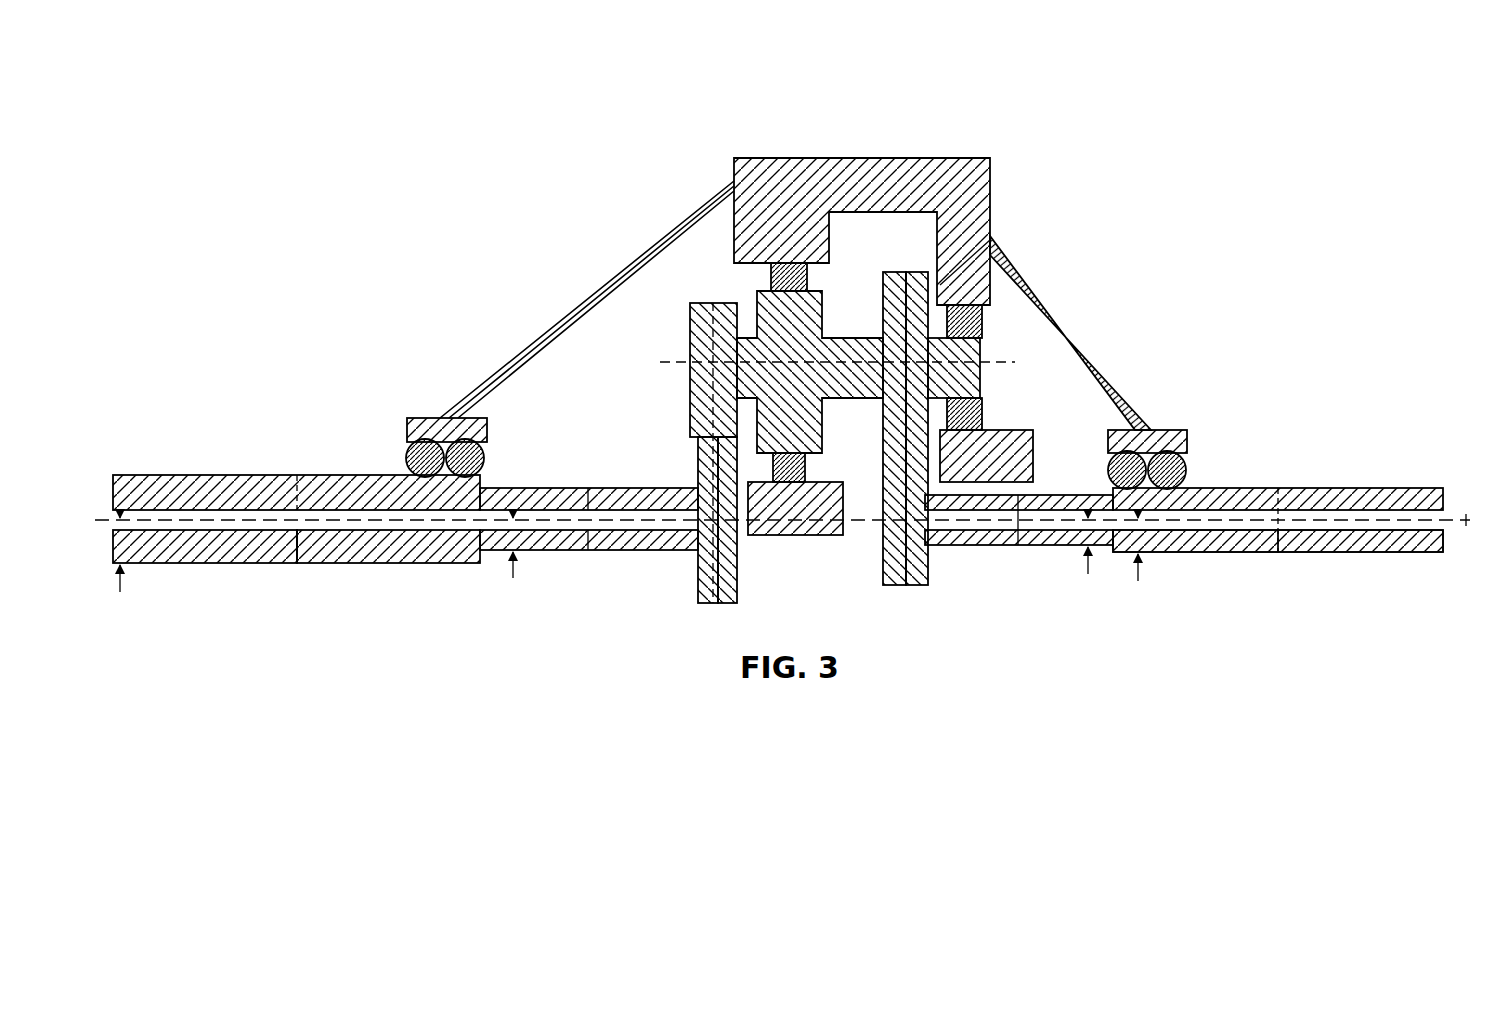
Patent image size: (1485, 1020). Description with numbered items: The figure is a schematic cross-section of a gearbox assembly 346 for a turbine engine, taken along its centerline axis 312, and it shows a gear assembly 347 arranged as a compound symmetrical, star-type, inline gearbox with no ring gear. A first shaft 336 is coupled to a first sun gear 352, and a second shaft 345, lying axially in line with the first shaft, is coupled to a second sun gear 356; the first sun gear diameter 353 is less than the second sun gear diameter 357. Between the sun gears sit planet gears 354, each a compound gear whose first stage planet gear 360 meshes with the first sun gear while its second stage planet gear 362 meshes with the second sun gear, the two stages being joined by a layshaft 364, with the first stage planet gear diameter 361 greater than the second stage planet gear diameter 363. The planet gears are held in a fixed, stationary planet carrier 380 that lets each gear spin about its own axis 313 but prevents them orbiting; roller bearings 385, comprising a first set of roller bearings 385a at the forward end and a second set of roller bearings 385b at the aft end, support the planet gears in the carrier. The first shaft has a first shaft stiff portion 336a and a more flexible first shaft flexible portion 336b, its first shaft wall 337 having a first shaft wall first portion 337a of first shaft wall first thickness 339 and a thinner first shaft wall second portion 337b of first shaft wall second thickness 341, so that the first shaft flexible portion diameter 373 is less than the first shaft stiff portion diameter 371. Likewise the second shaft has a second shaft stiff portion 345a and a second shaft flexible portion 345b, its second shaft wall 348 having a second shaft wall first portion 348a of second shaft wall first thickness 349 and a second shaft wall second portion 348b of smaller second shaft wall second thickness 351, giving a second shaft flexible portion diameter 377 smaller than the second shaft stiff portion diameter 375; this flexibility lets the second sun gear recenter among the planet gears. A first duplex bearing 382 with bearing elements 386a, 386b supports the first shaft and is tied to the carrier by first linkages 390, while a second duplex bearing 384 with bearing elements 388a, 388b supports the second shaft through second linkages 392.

The gearbox assembly 346 is at (287, 98).
The gear assembly 347 is at (1078, 132).
The second shaft wall 348 is at (172, 475).
The second shaft wall first portion 348a is at (185, 563).
The second shaft wall second portion 348b is at (500, 550).
The second shaft 345 is at (270, 563).
The second shaft stiff portion 345a is at (367, 563).
The second shaft flexible portion 345b is at (568, 552).
The second shaft wall first thickness 349 is at (122, 585).
The second shaft wall second thickness 351 is at (515, 570).
The second shaft stiff portion diameter 375 is at (295, 500).
The second shaft flexible portion diameter 377 is at (592, 515).
The second stage planet gear 362 is at (722, 302).
The second stage planet gear diameter 363 is at (712, 327).
The second sun gear 356 is at (700, 592).
The second sun gear diameter 357 is at (727, 573).
The first stage planet gear 360 is at (902, 272).
The layshaft 364 is at (968, 352).
The first sun gear diameter 353 is at (887, 560).
The first sun gear 352 is at (925, 560).
The axis 313 is at (997, 363).
The planet carrier 380 is at (855, 158).
The first set of roller bearings 385a is at (770, 263).
The second set of roller bearings 385b is at (982, 325).
The roller bearings 385 is at (768, 468).
The first shaft flexible portion diameter 373 is at (1040, 505).
The second linkages 392 is at (548, 328).
The planet gears 354 is at (658, 314).
The first linkages 390 is at (1110, 375).
The first stage planet gear diameter 361 is at (992, 240).
The second duplex bearing 384 is at (406, 414).
The first set of bearing elements 388a is at (412, 458).
The second set of bearing elements 388b is at (487, 455).
The first duplex bearing 382 is at (1193, 420).
The first set of bearing elements 386a is at (1113, 473).
The second set of bearing elements 386b is at (1185, 468).
The first shaft wall second portion 337b is at (1030, 542).
The first shaft flexible portion 336b is at (1075, 545).
The first shaft wall second thickness 341 is at (1090, 573).
The first shaft wall first thickness 339 is at (1142, 570).
The first shaft wall 337 is at (1367, 497).
The first shaft 336 is at (1368, 552).
The first shaft stiff portion 336a is at (1225, 552).
The first shaft wall first portion 337a is at (1300, 552).
The first shaft stiff portion diameter 371 is at (1280, 500).
The centerline axis 312 is at (1467, 523).